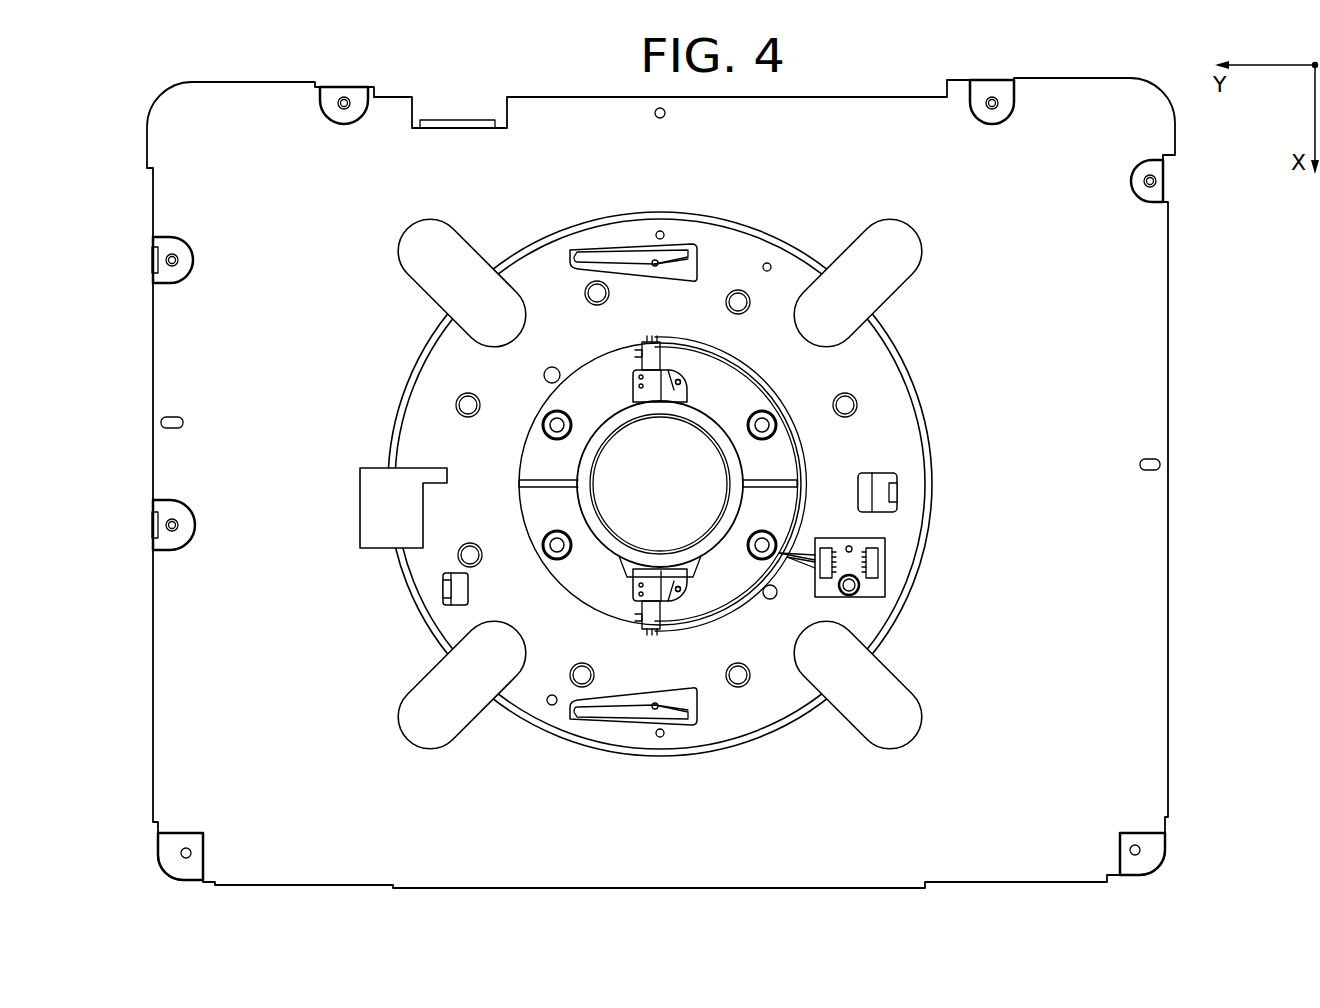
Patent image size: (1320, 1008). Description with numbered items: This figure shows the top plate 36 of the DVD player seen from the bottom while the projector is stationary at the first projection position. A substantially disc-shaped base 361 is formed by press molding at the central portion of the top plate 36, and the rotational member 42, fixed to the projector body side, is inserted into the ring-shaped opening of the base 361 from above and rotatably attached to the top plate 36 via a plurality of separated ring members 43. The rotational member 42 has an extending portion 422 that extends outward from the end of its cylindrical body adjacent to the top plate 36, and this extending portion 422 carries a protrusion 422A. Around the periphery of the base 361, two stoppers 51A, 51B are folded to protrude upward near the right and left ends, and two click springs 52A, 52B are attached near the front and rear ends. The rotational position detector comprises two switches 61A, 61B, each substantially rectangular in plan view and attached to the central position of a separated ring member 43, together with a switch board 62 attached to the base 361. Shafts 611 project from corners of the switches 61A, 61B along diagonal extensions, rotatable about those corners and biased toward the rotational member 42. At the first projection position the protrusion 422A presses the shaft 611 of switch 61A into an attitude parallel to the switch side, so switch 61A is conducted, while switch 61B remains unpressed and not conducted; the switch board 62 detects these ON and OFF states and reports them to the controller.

The top plate 36 is at (1163, 413).
The base 361 is at (893, 398).
The rotational member 42 is at (585, 549).
The extending portion 422 is at (606, 527).
The protrusion 422A is at (628, 602).
The separated ring members 43 is at (520, 497).
The stopper 51A is at (440, 592).
The stopper 51B is at (897, 492).
The click spring 52A is at (686, 734).
The click spring 52B is at (686, 234).
The switch 61A is at (674, 610).
The switch 61B is at (668, 356).
The shaft 611 is at (687, 396).
The switch board 62 is at (877, 590).